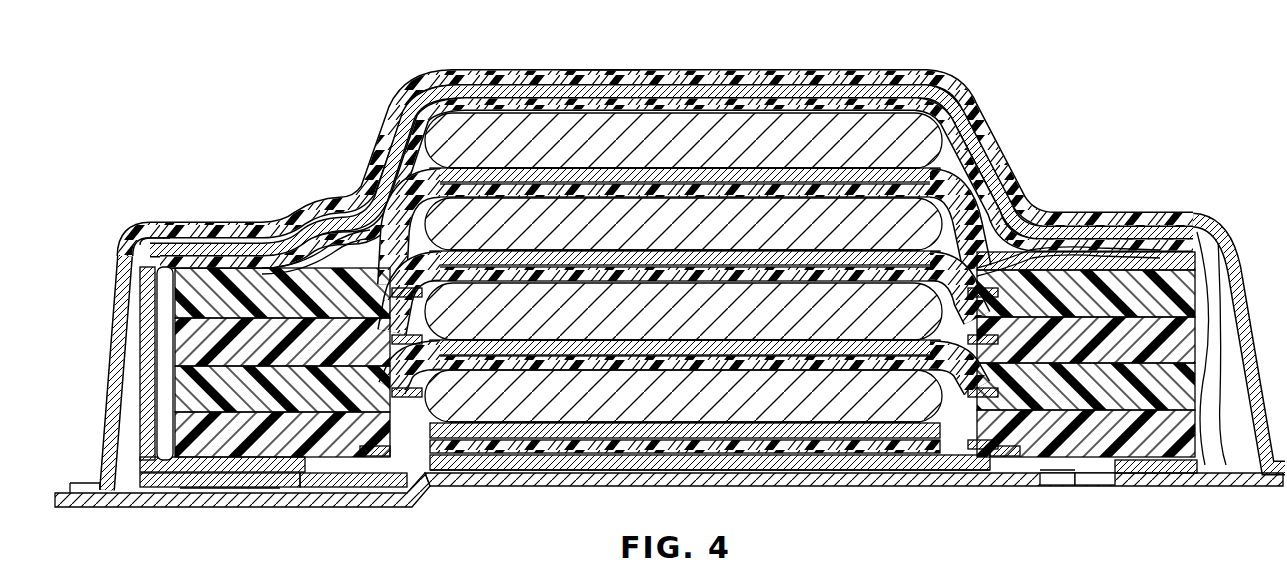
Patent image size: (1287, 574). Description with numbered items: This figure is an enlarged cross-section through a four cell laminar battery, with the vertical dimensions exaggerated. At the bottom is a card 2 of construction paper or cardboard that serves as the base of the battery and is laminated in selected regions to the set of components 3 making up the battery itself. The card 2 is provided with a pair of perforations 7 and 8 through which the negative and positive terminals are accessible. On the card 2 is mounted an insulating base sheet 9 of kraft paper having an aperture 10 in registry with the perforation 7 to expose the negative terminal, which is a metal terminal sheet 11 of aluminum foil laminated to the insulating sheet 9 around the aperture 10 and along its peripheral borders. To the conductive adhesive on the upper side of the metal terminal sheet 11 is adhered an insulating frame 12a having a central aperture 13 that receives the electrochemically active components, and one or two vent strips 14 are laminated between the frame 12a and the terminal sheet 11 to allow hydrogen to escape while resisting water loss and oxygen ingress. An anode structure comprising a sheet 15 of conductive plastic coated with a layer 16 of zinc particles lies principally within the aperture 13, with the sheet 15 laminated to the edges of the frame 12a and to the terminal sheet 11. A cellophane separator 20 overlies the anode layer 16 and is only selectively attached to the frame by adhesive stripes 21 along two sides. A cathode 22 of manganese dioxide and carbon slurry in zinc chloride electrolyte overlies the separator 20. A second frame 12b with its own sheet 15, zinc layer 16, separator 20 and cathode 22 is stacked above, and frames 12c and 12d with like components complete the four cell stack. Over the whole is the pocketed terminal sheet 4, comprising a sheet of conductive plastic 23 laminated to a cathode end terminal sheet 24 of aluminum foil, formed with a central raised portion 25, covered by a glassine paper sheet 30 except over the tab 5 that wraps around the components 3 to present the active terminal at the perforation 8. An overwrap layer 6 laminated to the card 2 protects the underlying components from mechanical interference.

The card 2 is at (1252, 486).
The set of components 3 is at (1225, 352).
The pocketed terminal sheet 4 is at (1216, 250).
The tab 5 is at (112, 383).
The overwrap layer 6 is at (668, 64).
The perforation 7 is at (1047, 485).
The perforation 8 is at (266, 507).
The insulating base sheet 9 is at (896, 473).
The aperture 10 is at (1170, 475).
The metal terminal sheet 11 is at (1092, 485).
The insulating frame 12a is at (1204, 440).
The second frame 12b is at (170, 400).
The frame 12c is at (150, 305).
The frame 12d is at (160, 238).
The central aperture 13 is at (398, 286).
The vent strips 14 is at (378, 458).
The conductive plastic sheet 15 is at (548, 195).
The layer of active anode material 16 is at (664, 180).
The separator 20 is at (530, 168).
The adhesive stripes 21 is at (262, 258).
The cathode 22 is at (683, 267).
The sheet of conductive plastic 23 is at (862, 103).
The cathode end terminal sheet 24 is at (960, 112).
The central raised portion 25 is at (800, 88).
The glassine paper sheet 30 is at (612, 60).